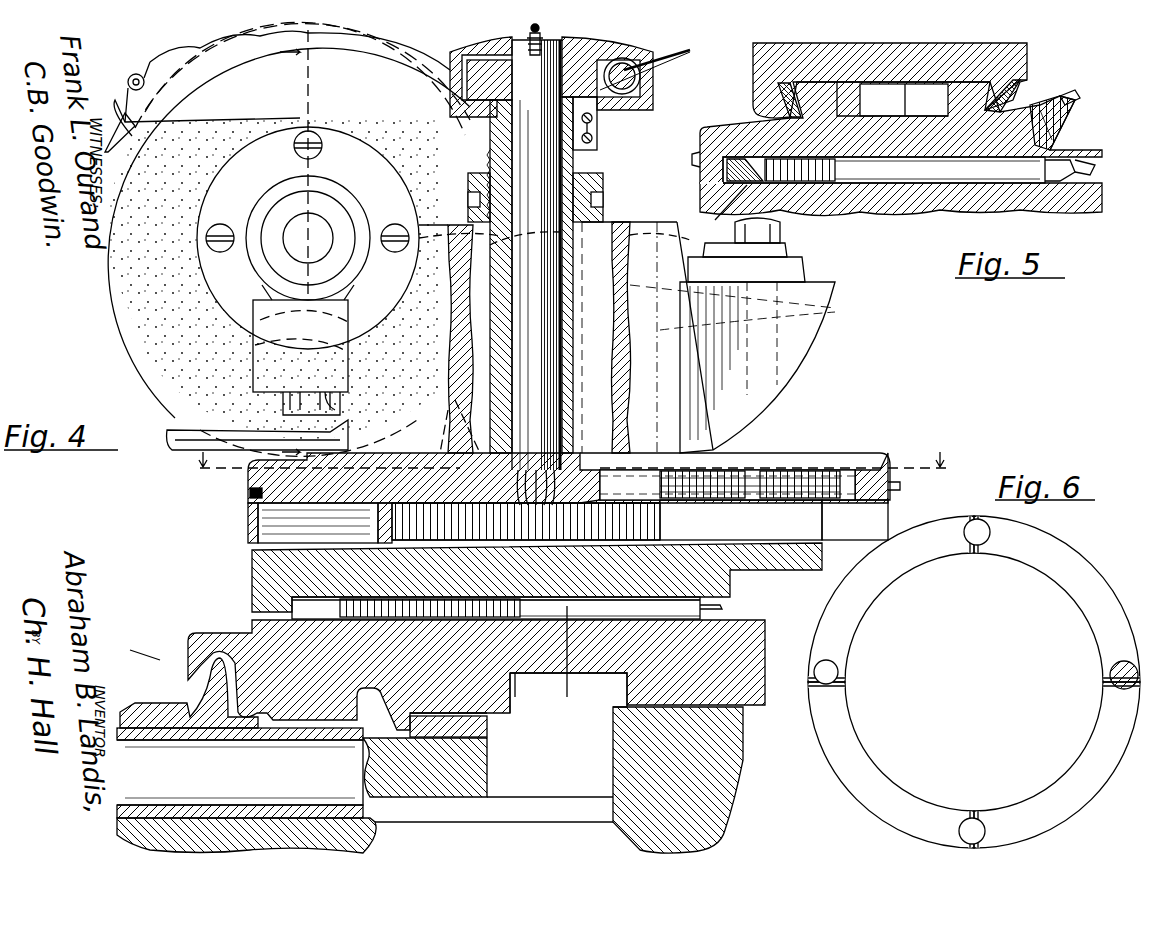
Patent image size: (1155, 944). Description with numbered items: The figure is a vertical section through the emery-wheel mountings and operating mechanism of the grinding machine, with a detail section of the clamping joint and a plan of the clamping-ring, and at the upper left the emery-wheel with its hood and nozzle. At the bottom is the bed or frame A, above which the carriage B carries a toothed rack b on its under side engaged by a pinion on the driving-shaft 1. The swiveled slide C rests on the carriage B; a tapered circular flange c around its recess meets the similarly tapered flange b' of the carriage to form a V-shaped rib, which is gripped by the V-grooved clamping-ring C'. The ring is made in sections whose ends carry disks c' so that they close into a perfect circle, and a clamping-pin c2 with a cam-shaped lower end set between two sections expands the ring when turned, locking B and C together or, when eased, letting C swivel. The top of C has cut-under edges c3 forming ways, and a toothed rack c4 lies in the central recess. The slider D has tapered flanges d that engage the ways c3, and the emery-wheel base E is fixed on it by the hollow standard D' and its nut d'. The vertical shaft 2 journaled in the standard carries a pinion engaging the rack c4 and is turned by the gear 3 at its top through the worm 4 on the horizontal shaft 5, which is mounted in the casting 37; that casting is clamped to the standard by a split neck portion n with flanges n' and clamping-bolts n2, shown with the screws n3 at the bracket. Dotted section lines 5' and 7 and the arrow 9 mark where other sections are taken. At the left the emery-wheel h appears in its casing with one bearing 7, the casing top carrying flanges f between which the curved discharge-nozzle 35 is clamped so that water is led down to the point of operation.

In FIG. 4, the driving-shaft 1 is at (240, 772).
In FIG. 4, the vertical shaft 2 is at (537, 272).
In FIG. 4, the gear 3 is at (600, 64).
In FIG. 4, the worm 4 is at (641, 72).
In FIG. 4, the horizontal shaft 5 is at (574, 376).
In FIG. 4, the springs 5' is at (750, 458).
In FIG. 4, the bearing 7 is at (572, 466).
In FIG. 4, the bracket arm 9 is at (293, 243).
In FIG. 4, the curved discharge-nozzle 35 is at (120, 120).
In FIG. 4, the casting 37 is at (657, 53).
In FIG. 4, the bed or frame A is at (190, 700).
In FIG. 4, the carriage B is at (218, 625).
In FIG. 5, the carriage B is at (710, 188).
In FIG. 4, the swiveled slide C is at (521, 577).
In FIG. 5, the swiveled slide C is at (889, 132).
In FIG. 4, the clamping-ring C' is at (661, 507).
In FIG. 5, the clamping-ring C' is at (726, 212).
In FIG. 6, the clamping-ring C' is at (974, 682).
In FIG. 4, the slider D is at (560, 498).
In FIG. 5, the slider D is at (876, 80).
In FIG. 4, the hollow standard D' is at (627, 337).
In FIG. 4, the emery-wheel base E is at (348, 222).
In FIG. 4, the toothed rack b is at (460, 736).
In FIG. 4, the flange b' is at (748, 608).
In FIG. 5, the flange b' is at (1104, 170).
In FIG. 4, the circular flange c is at (521, 604).
In FIG. 5, the circular flange c is at (924, 163).
In FIG. 6, the disk c' is at (905, 681).
In FIG. 5, the clamping-pin c2 is at (1078, 104).
In FIG. 6, the clamping-pin c2 is at (1110, 676).
In FIG. 5, the cut-under edges c3 is at (780, 95).
In FIG. 4, the toothed rack c4 is at (642, 527).
In FIG. 5, the toothed rack c4 is at (892, 99).
In FIG. 4, the flanges d is at (582, 135).
In FIG. 5, the flanges d is at (1070, 90).
In FIG. 4, the nut d' is at (517, 196).
In FIG. 4, the flanges f is at (164, 68).
In FIG. 4, the grinding wheel h is at (165, 345).
In FIG. 4, the neck portion n is at (506, 256).
In FIG. 4, the flanges n' is at (605, 127).
In FIG. 4, the clamping-bolts n2 is at (594, 118).
In FIG. 4, the screw n3 is at (594, 140).